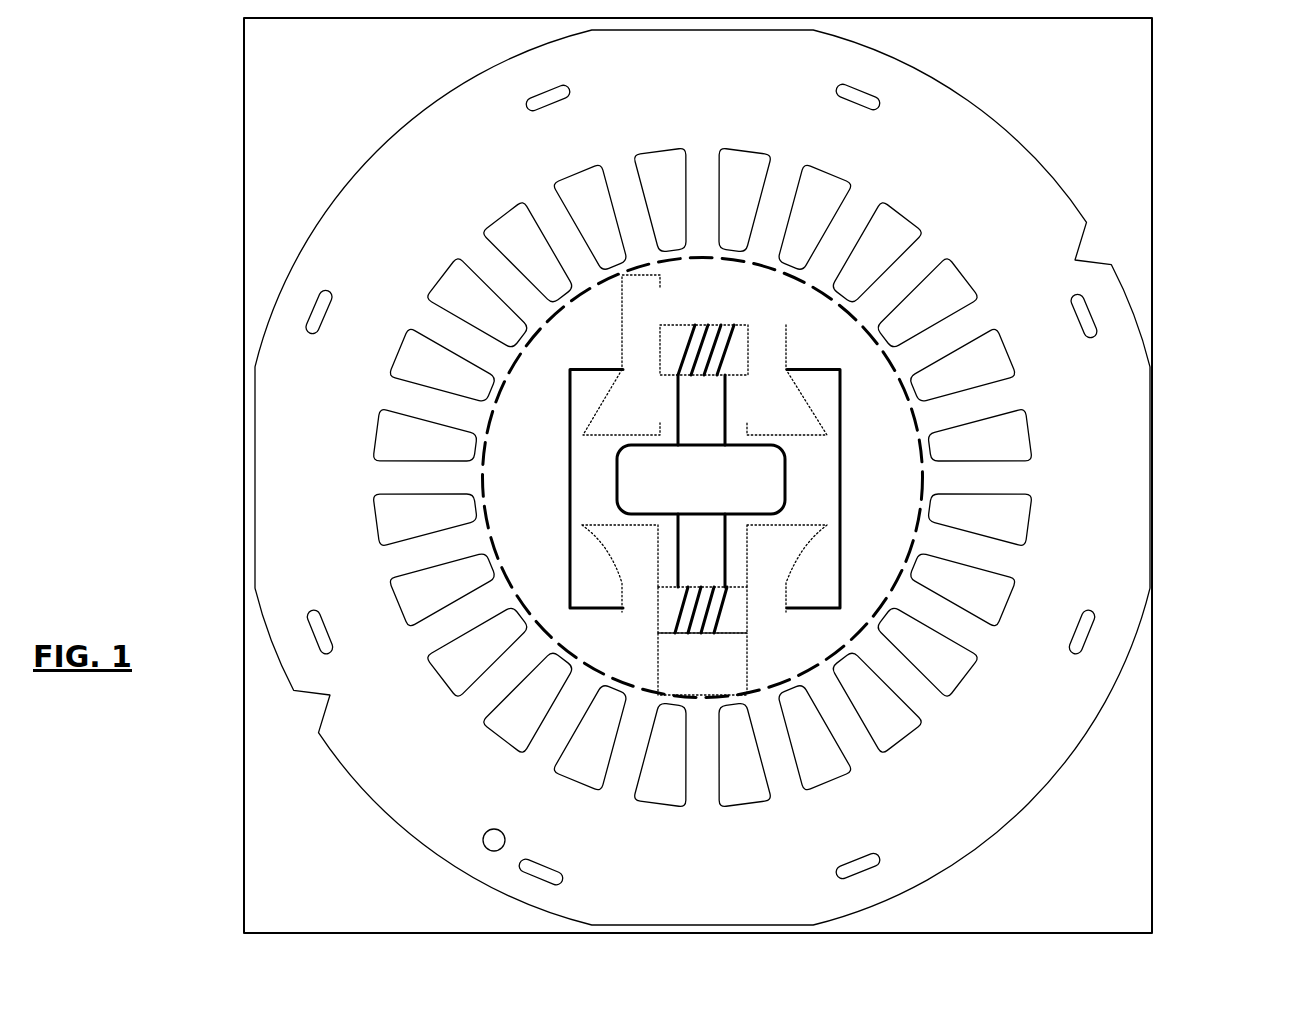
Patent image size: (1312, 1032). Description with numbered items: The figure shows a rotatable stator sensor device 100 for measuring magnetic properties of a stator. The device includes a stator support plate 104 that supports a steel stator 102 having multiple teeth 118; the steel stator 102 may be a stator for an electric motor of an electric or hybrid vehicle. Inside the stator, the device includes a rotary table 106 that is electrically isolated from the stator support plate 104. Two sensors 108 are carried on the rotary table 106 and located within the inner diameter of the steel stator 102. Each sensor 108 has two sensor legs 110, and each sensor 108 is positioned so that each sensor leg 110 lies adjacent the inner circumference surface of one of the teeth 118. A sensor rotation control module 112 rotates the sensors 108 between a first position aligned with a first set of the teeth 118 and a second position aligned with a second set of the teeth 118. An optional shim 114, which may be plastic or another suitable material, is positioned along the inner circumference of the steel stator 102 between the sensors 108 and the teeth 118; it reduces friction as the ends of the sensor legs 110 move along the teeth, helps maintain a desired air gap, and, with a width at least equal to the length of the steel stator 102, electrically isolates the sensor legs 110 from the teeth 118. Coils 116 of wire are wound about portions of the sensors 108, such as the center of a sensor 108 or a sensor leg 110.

The rotatable stator sensor device 100 is at (1243, 133).
The steel stator 102 is at (385, 143).
The stator support plate 104 is at (243, 183).
The rotary table 106 is at (570, 488).
The sensor 108 is at (802, 415).
The sensor leg 110 is at (660, 287).
The sensor rotation control module 112 is at (785, 473).
The shim 114 is at (552, 313).
The coil 116 is at (733, 345).
The tooth 118 is at (462, 415).